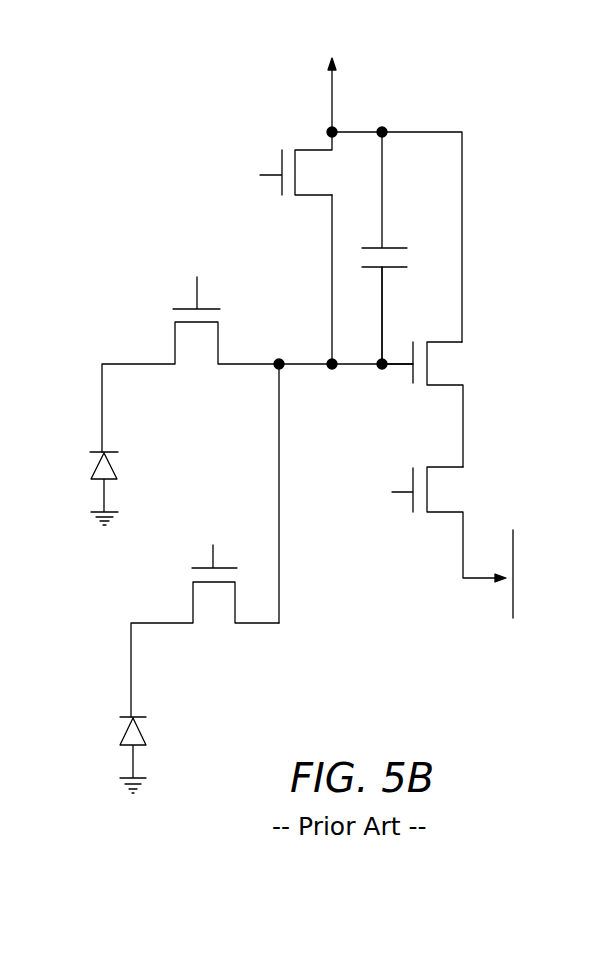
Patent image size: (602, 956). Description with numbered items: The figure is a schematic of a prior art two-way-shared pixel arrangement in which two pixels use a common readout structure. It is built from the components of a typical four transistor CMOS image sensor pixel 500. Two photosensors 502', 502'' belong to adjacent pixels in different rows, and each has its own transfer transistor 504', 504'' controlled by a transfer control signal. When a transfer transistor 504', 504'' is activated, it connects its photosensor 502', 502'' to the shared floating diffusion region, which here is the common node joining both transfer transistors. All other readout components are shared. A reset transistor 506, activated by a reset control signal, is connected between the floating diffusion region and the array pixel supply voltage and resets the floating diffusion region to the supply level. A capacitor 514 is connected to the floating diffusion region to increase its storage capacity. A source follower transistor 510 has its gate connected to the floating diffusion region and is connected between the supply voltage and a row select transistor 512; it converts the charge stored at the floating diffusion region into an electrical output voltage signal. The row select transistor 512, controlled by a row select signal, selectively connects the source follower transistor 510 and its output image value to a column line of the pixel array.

The CMOS image sensor pixel 500 is at (483, 112).
The photosensor 502' is at (66, 489).
The photosensor 502'' is at (92, 755).
The transfer transistor 504' is at (190, 347).
The transfer transistor 504'' is at (205, 612).
The reset transistor 506 is at (296, 201).
The source follower transistor 510 is at (424, 389).
The row select transistor 512 is at (440, 527).
The capacitor 514 is at (398, 243).